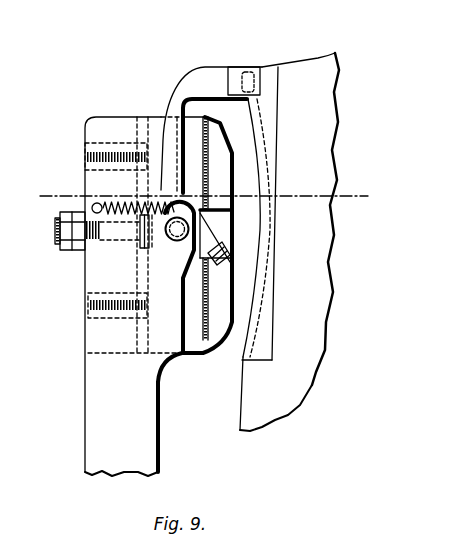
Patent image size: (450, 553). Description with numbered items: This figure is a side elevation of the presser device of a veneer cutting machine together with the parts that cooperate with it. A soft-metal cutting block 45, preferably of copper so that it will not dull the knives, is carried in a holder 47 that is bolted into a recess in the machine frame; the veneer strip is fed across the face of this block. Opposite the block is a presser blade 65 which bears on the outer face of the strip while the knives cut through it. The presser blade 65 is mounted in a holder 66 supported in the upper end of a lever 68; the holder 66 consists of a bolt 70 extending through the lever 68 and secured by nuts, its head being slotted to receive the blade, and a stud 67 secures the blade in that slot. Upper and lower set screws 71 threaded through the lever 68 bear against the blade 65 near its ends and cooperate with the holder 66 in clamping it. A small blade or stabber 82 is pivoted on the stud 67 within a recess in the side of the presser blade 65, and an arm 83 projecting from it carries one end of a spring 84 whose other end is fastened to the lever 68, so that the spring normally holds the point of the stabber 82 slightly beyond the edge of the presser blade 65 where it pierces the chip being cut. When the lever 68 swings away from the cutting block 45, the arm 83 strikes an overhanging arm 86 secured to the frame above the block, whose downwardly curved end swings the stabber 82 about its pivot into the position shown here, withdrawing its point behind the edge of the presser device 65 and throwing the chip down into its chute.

The cutting block 45 is at (265, 127).
The holder 47 is at (268, 333).
The presser blade 65 is at (215, 128).
The holder 66 is at (150, 243).
The stud 67 is at (177, 235).
The lever 68 is at (100, 378).
The bolt 70 is at (52, 228).
The set screws 71 is at (93, 147).
The blade (stabber) 82 is at (205, 242).
The arm 83 is at (208, 190).
The spring 84 is at (112, 203).
The overhanging arm 86 is at (182, 85).